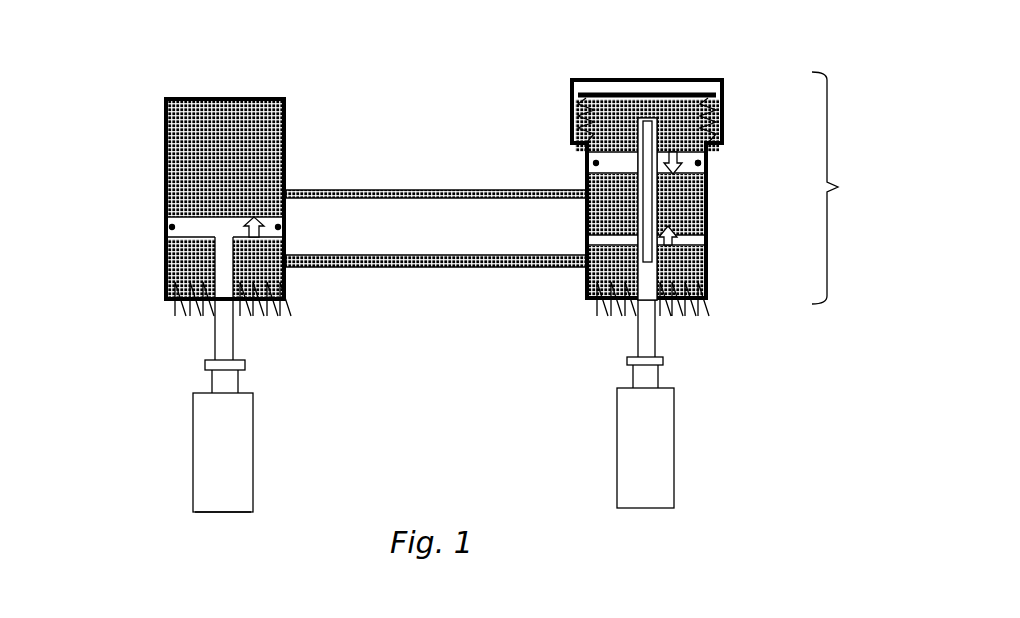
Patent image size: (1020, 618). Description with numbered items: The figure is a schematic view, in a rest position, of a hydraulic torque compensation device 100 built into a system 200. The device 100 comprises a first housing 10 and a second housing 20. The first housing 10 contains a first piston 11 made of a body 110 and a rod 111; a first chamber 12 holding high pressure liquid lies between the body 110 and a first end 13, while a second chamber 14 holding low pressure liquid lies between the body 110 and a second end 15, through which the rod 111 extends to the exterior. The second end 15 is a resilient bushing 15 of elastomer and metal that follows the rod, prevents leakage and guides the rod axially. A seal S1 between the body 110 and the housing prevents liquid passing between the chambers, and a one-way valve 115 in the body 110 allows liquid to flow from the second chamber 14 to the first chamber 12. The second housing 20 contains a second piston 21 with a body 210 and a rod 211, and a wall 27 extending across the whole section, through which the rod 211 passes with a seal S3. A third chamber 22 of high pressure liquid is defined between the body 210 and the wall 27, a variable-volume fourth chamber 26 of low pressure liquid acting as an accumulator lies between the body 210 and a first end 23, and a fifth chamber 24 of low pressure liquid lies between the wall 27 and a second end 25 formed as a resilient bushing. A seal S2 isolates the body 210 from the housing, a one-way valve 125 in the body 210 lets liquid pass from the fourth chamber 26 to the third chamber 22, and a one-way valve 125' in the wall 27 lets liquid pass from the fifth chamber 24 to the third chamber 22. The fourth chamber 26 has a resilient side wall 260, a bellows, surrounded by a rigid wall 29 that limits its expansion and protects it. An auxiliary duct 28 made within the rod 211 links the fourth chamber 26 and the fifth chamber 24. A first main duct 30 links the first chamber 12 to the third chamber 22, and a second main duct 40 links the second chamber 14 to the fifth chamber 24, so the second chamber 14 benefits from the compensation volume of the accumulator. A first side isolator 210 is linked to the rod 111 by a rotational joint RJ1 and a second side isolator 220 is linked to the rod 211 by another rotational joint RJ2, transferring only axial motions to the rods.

The first housing 10 is at (132, 226).
The first piston 11 is at (203, 224).
The first chamber 12 is at (255, 148).
The first end 13 is at (227, 96).
The second chamber 14 is at (257, 266).
The second end / resilient bushing 15 is at (262, 320).
The second housing 20 is at (740, 187).
The second piston 21 is at (614, 157).
The third chamber 22 is at (603, 204).
The first end 23 is at (662, 92).
The fifth chamber 24 is at (603, 275).
The second end / resilient bushing 25 is at (690, 312).
The fourth chamber 26 is at (617, 115).
The wall 27 is at (708, 255).
The auxiliary duct 28 is at (586, 178).
The rigid wall 29 is at (708, 78).
The first main duct 30 is at (438, 188).
The second main duct 40 is at (440, 268).
The hydraulic torque compensation device 100 is at (848, 188).
The body 110 is at (182, 247).
The rod 111 is at (213, 278).
The one-way valve 115 is at (287, 240).
The one-way valve 125 is at (739, 173).
The one-way valve 125' is at (688, 337).
The system 200 is at (160, 428).
The body / first side isolator 210 is at (240, 515).
The rod 211 is at (708, 222).
The second side isolator 220 is at (660, 510).
The resilient side wall 260 is at (570, 93).
The rotational joint RJ1 is at (204, 362).
The rotational joint RJ2 is at (622, 359).
The seal S1 is at (165, 210).
The seal S2 is at (585, 165).
The seal S3 is at (622, 228).